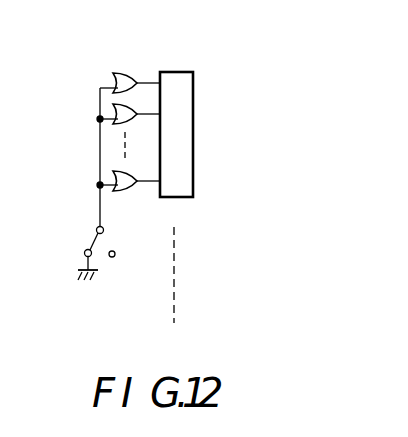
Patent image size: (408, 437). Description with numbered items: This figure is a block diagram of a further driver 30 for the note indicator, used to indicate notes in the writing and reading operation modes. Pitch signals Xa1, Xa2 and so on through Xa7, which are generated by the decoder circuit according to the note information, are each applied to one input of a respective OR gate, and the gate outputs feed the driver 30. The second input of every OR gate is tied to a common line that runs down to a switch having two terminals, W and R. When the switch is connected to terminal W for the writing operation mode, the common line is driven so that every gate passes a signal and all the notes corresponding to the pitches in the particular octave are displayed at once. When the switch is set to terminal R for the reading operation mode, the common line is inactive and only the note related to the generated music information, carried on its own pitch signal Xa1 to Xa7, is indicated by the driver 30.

The driver 30 is at (170, 82).
The pitch signal Xa1 is at (118, 78).
The pitch signal Xa2 is at (118, 109).
The pitch signal Xa7 is at (118, 177).
The terminal W is at (81, 261).
The terminal R is at (122, 252).